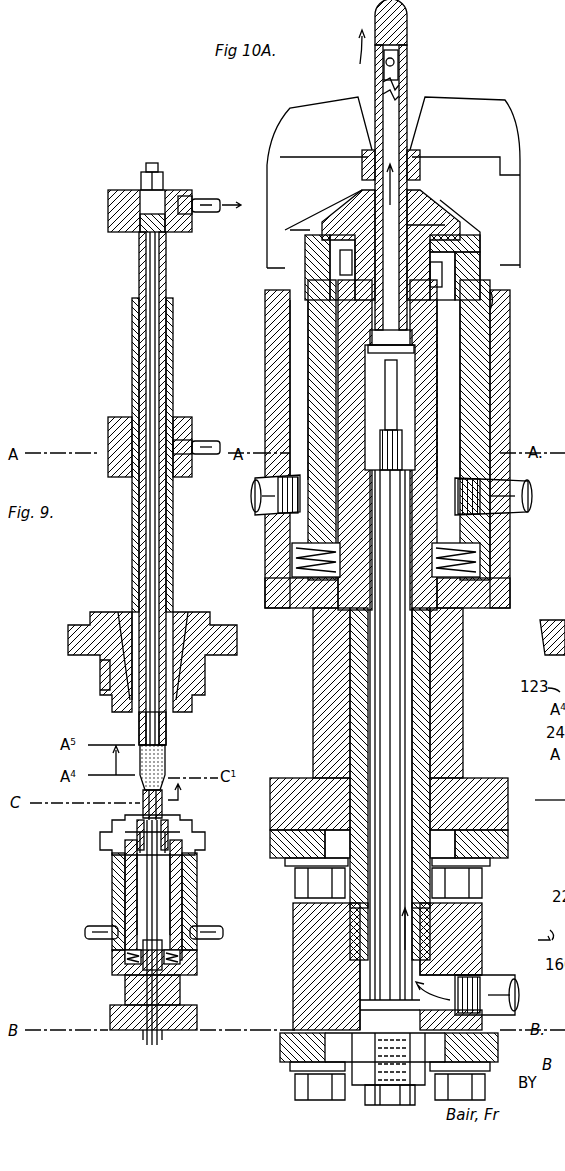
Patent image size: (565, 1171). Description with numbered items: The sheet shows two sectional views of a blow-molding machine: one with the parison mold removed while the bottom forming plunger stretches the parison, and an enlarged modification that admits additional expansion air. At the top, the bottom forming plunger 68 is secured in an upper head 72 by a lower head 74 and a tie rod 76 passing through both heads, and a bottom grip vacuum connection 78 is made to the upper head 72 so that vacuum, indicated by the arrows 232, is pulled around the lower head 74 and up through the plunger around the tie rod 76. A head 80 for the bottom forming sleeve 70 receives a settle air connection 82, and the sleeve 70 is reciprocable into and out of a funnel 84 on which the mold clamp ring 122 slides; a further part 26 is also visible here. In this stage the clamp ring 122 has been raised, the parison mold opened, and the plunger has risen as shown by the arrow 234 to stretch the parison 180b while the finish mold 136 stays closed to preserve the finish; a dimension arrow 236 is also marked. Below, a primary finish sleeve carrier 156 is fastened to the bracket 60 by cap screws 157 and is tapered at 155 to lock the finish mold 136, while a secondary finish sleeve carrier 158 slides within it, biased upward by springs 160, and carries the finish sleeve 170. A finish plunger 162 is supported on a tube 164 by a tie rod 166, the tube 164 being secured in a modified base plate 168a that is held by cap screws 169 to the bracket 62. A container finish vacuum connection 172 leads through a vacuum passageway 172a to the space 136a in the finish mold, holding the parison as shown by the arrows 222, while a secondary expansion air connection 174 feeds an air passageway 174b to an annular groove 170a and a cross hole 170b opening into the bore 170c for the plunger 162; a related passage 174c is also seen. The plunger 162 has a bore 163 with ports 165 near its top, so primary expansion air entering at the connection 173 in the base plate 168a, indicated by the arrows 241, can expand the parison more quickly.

In FIG. 9, the upper head 72 is at (112, 191).
In FIG. 9, the tie rod 76 is at (156, 166).
In FIG. 9, the bottom grip vacuum connection 78 is at (206, 196).
In FIG. 9, the arrows indicating bottom grip vacuum 232 is at (218, 212).
In FIG. 9, the bottom forming plunger 68 is at (139, 381).
In FIG. 9, the bottom forming sleeve 70 is at (132, 333).
In FIG. 9, the head for the bottom forming sleeve 80 is at (110, 425).
In FIG. 9, the settle air connection 82 is at (206, 440).
In FIG. 9, the flange 26 is at (82, 624).
In FIG. 9, the funnel 84 is at (176, 614).
In FIG. 9, the mold clamp ring 122 is at (208, 690).
In FIG. 9, the lower head 74 is at (167, 752).
In FIG. 9, the parison 180b is at (170, 770).
In FIG. 9, the arrow indicating rise of bottom forming plunger 234 is at (110, 760).
In FIG. 9, the dimension 236 is at (182, 798).
In FIG. 9, the finish plunger 162 is at (143, 812).
In FIG. 10A, the finish plunger 162 is at (409, 14).
In FIG. 9, the finish mold 136 is at (196, 835).
In FIG. 10A, the finish mold 136 is at (490, 230).
In FIG. 9, the finish sleeve 170 is at (137, 834).
In FIG. 10A, the finish sleeve 170 is at (350, 212).
In FIG. 9, the arrows indicating finish vacuum 222 is at (125, 866).
In FIG. 9, the secondary finish sleeve carrier 158 is at (197, 906).
In FIG. 10A, the secondary finish sleeve carrier 158 is at (472, 394).
In FIG. 9, the tie rod 166 is at (154, 1036).
In FIG. 10A, the tie rod 166 is at (398, 650).
In FIG. 9, the container finish vacuum connection 172 is at (110, 940).
In FIG. 10A, the container finish vacuum connection 172 is at (268, 514).
In FIG. 9, the secondary expansion air connection 174 is at (208, 940).
In FIG. 10A, the secondary expansion air connection 174 is at (527, 492).
In FIG. 9, the primary finish sleeve carrier 156 is at (112, 968).
In FIG. 10A, the primary finish sleeve carrier 156 is at (492, 586).
In FIG. 9, the springs 160 is at (182, 964).
In FIG. 10A, the springs 160 is at (480, 556).
In FIG. 9, the tube 164 is at (166, 1036).
In FIG. 10A, the tube 164 is at (432, 720).
In FIG. 10A, the ports 165 is at (412, 57).
In FIG. 10A, the arrows indicating primary expansion air 241 is at (492, 918).
In FIG. 10A, the space in the finish mold 136a is at (430, 200).
In FIG. 10A, the bore of the finish plunger 163 is at (415, 222).
In FIG. 10A, the bore for the finish plunger 170c is at (322, 210).
In FIG. 10A, the cross hole 170b is at (345, 254).
In FIG. 10A, the air passageway 174b is at (470, 249).
In FIG. 10A, the annular groove 170a is at (480, 270).
In FIG. 10A, the taper 155 is at (505, 290).
In FIG. 10A, the passage 174c is at (455, 324).
In FIG. 10A, the vacuum passageway 172a is at (318, 350).
In FIG. 10A, the bracket 60 is at (300, 850).
In FIG. 10A, the cap screws 157 is at (298, 898).
In FIG. 10A, the modified base plate 168a is at (305, 980).
In FIG. 10A, the primary expansion air connection 173 is at (500, 975).
In FIG. 10A, the bracket 62 is at (282, 1050).
In FIG. 10A, the cap screws 169 is at (435, 1098).